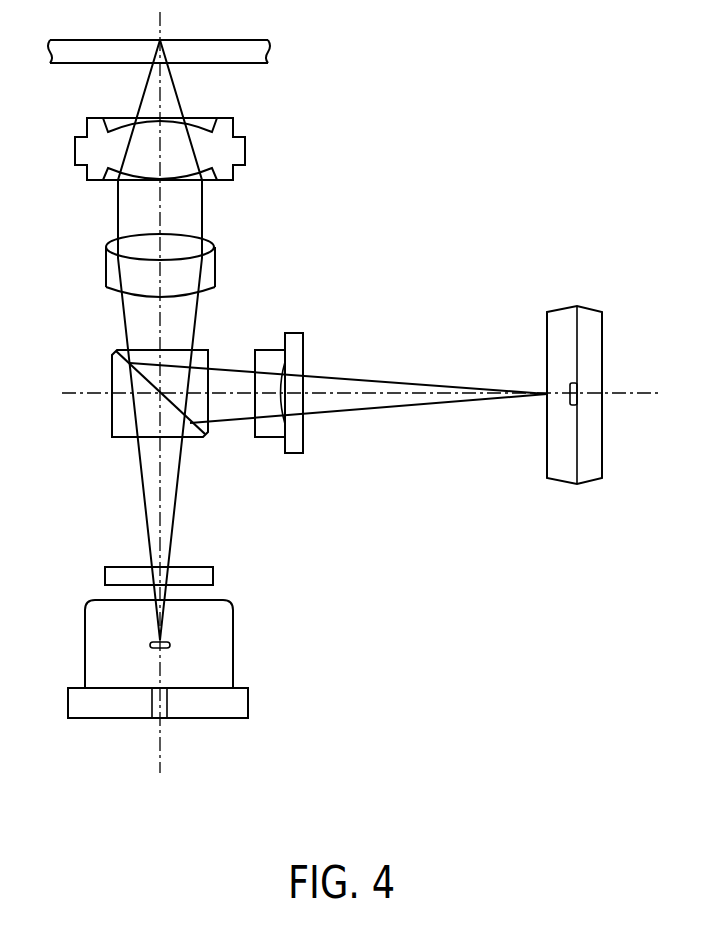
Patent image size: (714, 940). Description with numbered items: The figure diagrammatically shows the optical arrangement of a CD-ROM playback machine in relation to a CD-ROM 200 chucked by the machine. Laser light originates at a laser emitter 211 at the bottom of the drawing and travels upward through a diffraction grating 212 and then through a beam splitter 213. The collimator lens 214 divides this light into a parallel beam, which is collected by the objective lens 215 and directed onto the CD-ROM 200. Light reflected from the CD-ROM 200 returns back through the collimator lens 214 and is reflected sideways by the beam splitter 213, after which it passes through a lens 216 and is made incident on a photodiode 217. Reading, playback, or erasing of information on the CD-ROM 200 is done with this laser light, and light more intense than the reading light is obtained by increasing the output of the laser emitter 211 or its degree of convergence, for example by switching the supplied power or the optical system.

The CD-ROM 200 is at (247, 40).
The objective lens 215 is at (245, 150).
The collimator lens 214 is at (217, 270).
The beam splitter 213 is at (112, 427).
The lens 216 is at (303, 432).
The photodiode 217 is at (563, 470).
The diffraction grating 212 is at (216, 573).
The laser emitter 211 is at (225, 650).